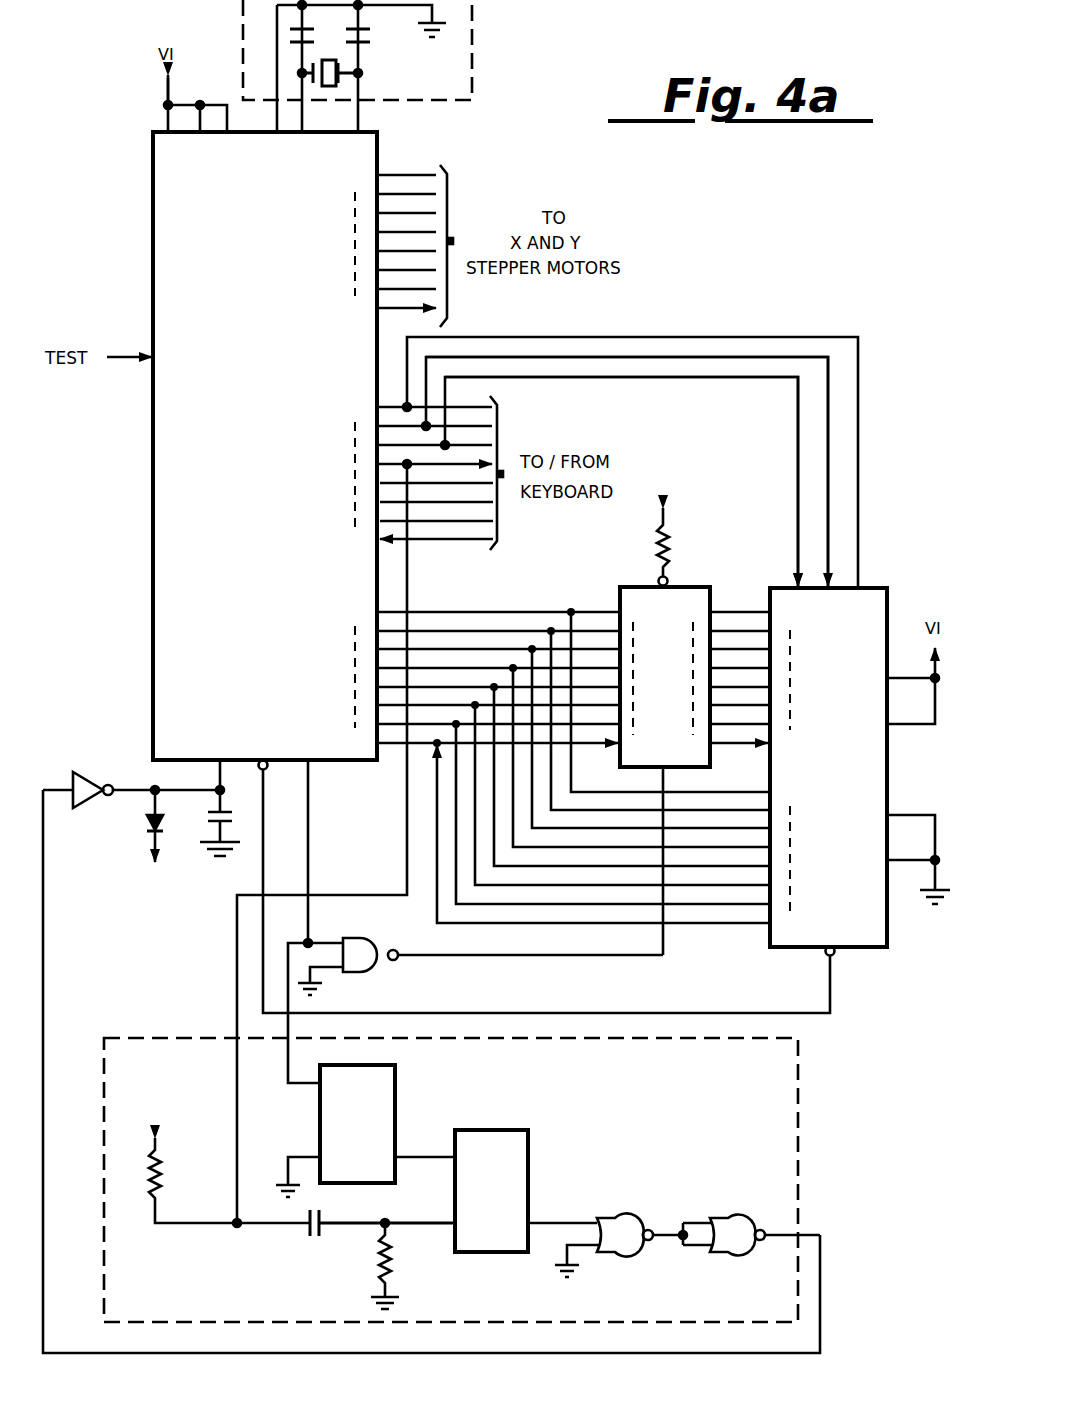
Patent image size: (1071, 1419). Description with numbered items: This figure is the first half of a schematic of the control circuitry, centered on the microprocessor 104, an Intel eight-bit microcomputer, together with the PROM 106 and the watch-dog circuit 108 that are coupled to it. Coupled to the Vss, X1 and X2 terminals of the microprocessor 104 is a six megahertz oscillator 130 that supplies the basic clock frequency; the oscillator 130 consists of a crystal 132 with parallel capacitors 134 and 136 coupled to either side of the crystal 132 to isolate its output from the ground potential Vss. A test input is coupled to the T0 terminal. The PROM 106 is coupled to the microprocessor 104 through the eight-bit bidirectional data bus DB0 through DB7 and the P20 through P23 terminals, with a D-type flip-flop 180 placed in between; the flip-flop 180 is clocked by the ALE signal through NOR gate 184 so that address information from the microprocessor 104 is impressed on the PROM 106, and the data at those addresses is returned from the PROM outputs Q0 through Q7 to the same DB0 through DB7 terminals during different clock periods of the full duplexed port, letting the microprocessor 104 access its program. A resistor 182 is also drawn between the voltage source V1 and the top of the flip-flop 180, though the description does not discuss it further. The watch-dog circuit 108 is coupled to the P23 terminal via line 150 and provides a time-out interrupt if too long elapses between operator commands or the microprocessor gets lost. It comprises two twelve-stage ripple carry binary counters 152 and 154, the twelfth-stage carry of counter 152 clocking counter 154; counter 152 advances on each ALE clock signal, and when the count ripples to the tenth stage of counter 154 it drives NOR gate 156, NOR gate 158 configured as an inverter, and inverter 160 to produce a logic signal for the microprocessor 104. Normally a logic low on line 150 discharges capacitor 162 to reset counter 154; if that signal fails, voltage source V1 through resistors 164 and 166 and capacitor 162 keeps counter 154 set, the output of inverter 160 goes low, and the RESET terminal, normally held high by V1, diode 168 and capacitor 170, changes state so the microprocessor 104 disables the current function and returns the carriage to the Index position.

The microprocessor 104 is at (153, 205).
The programmable read-only memory (PROM) 106 is at (784, 586).
The watch-dog circuit 108 is at (800, 1128).
The oscillator 130 is at (475, 43).
The crystal 132 is at (330, 86).
The capacitor 134 is at (306, 43).
The capacitor 136 is at (366, 43).
The line 150 is at (237, 960).
The counter 152 is at (397, 1075).
The counter 154 is at (530, 1147).
The NOR gate 156 is at (612, 1216).
The NOR gate 158 is at (723, 1216).
The inverter 160 is at (85, 771).
The capacitor 162 is at (313, 1243).
The resistor 164 is at (168, 1172).
The resistor 166 is at (392, 1262).
The diode 168 is at (148, 824).
The capacitor 170 is at (212, 815).
The D-type flip-flop 180 is at (634, 586).
The pull-up resistor 182 is at (672, 548).
The NOR gate 184 is at (365, 936).